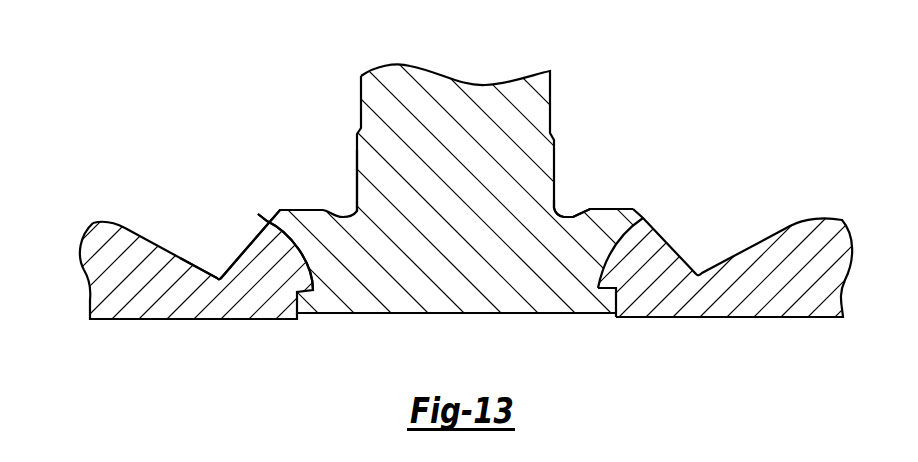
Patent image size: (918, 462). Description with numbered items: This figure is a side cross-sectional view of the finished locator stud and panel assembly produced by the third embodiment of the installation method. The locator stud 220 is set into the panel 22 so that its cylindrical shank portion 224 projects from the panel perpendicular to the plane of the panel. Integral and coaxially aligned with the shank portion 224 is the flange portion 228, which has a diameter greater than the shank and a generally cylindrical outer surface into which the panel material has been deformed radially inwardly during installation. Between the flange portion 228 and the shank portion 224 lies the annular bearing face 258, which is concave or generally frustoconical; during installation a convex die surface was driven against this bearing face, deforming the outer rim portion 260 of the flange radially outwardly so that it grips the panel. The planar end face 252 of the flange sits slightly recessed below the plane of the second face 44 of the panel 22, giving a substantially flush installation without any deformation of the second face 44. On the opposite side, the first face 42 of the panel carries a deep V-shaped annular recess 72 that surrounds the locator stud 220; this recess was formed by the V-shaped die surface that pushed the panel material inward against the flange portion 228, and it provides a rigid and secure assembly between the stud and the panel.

The locator stud 220 is at (590, 128).
The shank portion 224 is at (358, 153).
The annular bearing face 258 is at (607, 210).
The end face 252 is at (550, 315).
The panel 22 is at (113, 287).
The V-shaped annular recess 72 is at (218, 276).
The outer rim portion 260 is at (262, 217).
The flange portion 228 is at (304, 265).
The first face 42 is at (815, 220).
The second face 44 is at (797, 318).